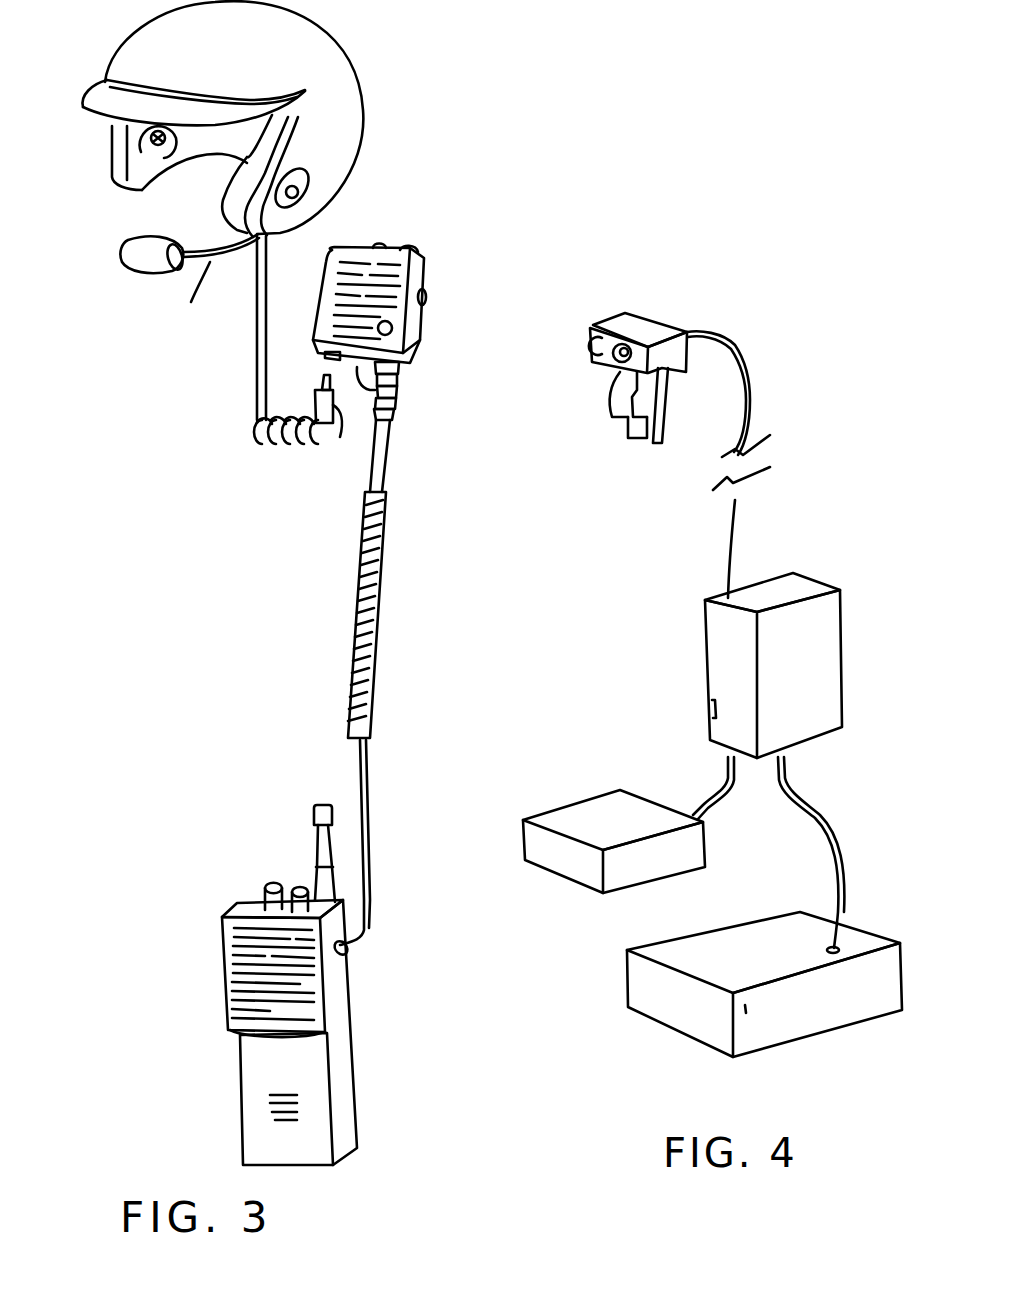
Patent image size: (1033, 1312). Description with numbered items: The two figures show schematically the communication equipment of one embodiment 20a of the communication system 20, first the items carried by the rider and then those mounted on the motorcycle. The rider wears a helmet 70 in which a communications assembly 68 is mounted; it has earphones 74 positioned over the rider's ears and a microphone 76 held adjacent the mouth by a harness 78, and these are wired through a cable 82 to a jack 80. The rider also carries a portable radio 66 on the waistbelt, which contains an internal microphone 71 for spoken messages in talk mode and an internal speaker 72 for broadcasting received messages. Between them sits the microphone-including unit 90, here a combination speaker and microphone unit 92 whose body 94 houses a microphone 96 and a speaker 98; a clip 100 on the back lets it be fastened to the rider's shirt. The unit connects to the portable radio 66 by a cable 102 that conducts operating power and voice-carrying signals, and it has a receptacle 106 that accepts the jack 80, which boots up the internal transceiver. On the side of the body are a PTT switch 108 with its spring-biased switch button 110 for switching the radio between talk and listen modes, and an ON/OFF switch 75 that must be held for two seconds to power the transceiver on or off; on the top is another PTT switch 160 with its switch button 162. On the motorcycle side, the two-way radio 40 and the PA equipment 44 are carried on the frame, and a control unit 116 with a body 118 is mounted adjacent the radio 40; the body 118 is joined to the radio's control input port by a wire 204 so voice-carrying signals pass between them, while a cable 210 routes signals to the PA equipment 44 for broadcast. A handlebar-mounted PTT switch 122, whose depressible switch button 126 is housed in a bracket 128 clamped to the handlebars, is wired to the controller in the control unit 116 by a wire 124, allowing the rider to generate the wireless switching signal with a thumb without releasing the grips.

In FIG. 3, the communication system 20 is at (459, 58).
In FIG. 4, the communication system 20 is at (808, 140).
In FIG. 3, the communication system embodiment 20a is at (461, 166).
In FIG. 4, the communication system embodiment 20a is at (840, 243).
In FIG. 4, the two-way radio 40 is at (687, 1020).
In FIG. 4, the public address (PA) equipment 44 is at (550, 818).
In FIG. 3, the portable radio 66 is at (350, 1118).
In FIG. 3, the communications assembly 68 is at (181, 305).
In FIG. 3, the helmet 70 is at (350, 113).
In FIG. 3, the internal microphone 71 is at (273, 1118).
In FIG. 3, the internal speaker 72 is at (262, 943).
In FIG. 3, the earphones 74 is at (141, 147).
In FIG. 3, the ON/OFF switch 75 is at (420, 250).
In FIG. 3, the microphone 76 is at (132, 265).
In FIG. 3, the harness 78 is at (229, 240).
In FIG. 3, the jack 80 is at (340, 437).
In FIG. 3, the cable 82 is at (257, 394).
In FIG. 3, the microphone-including unit 90 is at (420, 338).
In FIG. 3, the combination speaker and microphone unit 92 is at (432, 272).
In FIG. 3, the body 94 is at (427, 319).
In FIG. 3, the microphone 96 is at (352, 316).
In FIG. 3, the speaker 98 is at (364, 280).
In FIG. 3, the clip 100 is at (397, 408).
In FIG. 3, the cable 102 is at (374, 647).
In FIG. 3, the receptacle 106 is at (326, 357).
In FIG. 3, the PTT switch 108 is at (440, 297).
In FIG. 3, the switch button 110 is at (437, 292).
In FIG. 4, the control unit 116 is at (717, 670).
In FIG. 4, the body 118 is at (723, 720).
In FIG. 4, the PTT switch 122 is at (598, 335).
In FIG. 4, the wire 124 is at (749, 408).
In FIG. 4, the switch button 126 is at (588, 360).
In FIG. 4, the bracket 128 is at (618, 380).
In FIG. 3, the PTT switch 160 is at (396, 208).
In FIG. 3, the switch button 162 is at (377, 243).
In FIG. 4, the wire 204 is at (800, 794).
In FIG. 4, the cable 210 is at (726, 797).